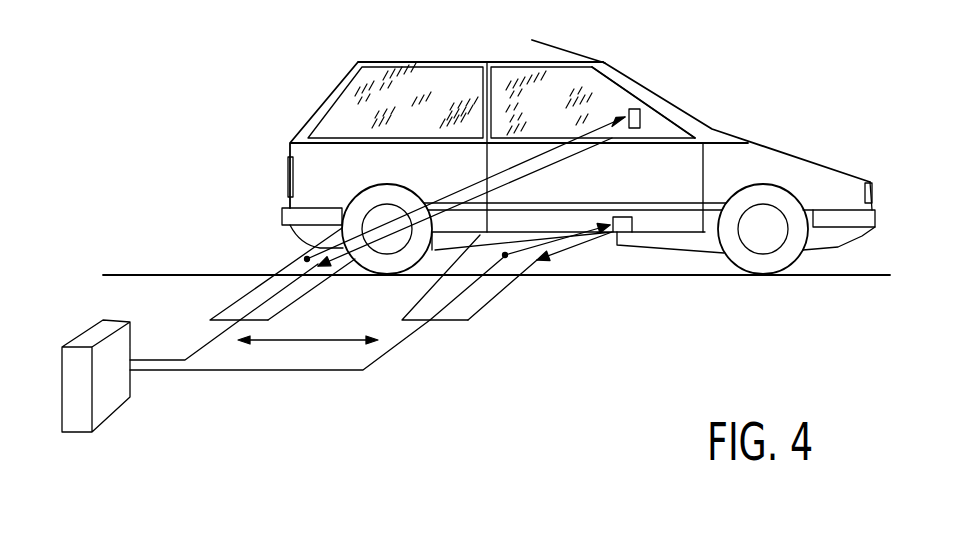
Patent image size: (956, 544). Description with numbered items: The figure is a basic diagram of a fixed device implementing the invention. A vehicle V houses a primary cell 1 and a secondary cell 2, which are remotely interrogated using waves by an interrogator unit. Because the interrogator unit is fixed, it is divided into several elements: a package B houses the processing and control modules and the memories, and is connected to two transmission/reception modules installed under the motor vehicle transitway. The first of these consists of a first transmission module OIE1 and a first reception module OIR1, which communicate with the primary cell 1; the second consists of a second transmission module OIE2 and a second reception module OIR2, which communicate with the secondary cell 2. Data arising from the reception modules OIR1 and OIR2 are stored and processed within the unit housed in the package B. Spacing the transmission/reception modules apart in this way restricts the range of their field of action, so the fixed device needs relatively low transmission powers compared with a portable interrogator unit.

The primary cell 1 is at (642, 116).
The secondary cell 2 is at (624, 217).
The vehicle V is at (779, 140).
The package B is at (113, 397).
The first transmission module OIE1 is at (242, 300).
The first reception module OIR1 is at (280, 302).
The second transmission module OIE2 is at (436, 308).
The second reception module OIR2 is at (488, 290).